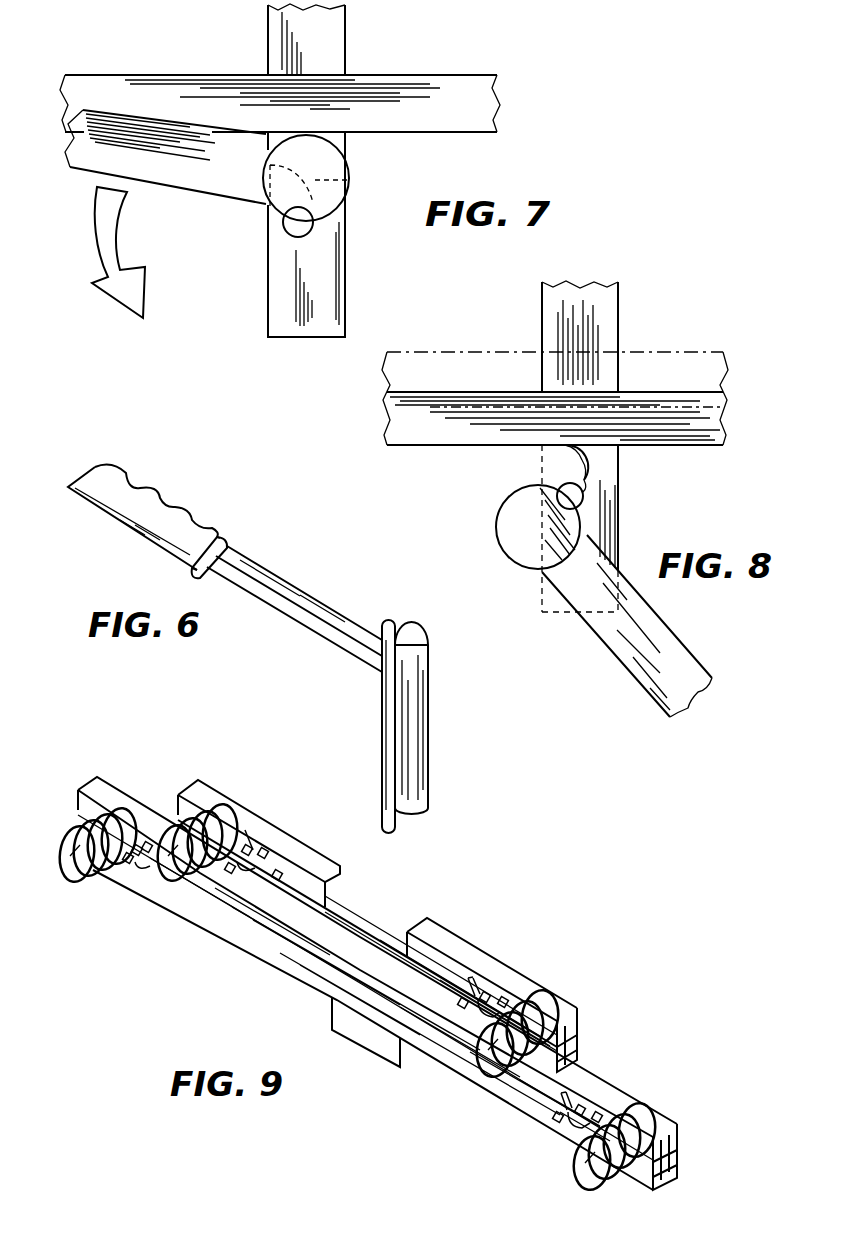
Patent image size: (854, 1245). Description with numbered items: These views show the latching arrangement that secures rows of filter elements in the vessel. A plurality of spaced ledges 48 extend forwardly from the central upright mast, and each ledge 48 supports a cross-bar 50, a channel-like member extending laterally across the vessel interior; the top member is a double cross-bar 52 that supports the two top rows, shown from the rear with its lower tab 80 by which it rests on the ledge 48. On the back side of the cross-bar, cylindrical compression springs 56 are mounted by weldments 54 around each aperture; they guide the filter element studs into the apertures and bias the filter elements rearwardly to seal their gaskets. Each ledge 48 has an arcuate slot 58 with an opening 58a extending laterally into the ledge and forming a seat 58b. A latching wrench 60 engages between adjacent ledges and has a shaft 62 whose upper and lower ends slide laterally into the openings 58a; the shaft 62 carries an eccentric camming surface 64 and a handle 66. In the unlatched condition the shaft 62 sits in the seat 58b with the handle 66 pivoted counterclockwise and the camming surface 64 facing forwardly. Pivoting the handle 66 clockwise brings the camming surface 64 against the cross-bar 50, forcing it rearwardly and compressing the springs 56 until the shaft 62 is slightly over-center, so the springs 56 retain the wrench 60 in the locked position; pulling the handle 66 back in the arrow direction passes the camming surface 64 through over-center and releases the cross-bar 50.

In FIG. 7, the ledge 48 is at (292, 288).
In FIG. 7, the cross-bar 50 is at (470, 86).
In FIG. 9, the double cross-bar 52 is at (455, 945).
In FIG. 9, the weldments 54 is at (260, 835).
In FIG. 9, the compression springs 56 is at (160, 826).
In FIG. 7, the arcuate slot 58 is at (352, 181).
In FIG. 8, the arcuate slot 58 is at (597, 467).
In FIG. 8, the opening 58a is at (545, 470).
In FIG. 8, the seat 58b is at (584, 481).
In FIG. 6, the latching wrench 60 is at (283, 640).
In FIG. 8, the shaft 62 is at (572, 499).
In FIG. 6, the shaft 62 is at (382, 724).
In FIG. 8, the eccentric camming surface 64 is at (512, 528).
In FIG. 6, the eccentric camming surface 64 is at (428, 744).
In FIG. 8, the handle 66 is at (675, 667).
In FIG. 6, the handle 66 is at (218, 538).
In FIG. 9, the lower tab 80 is at (383, 1040).